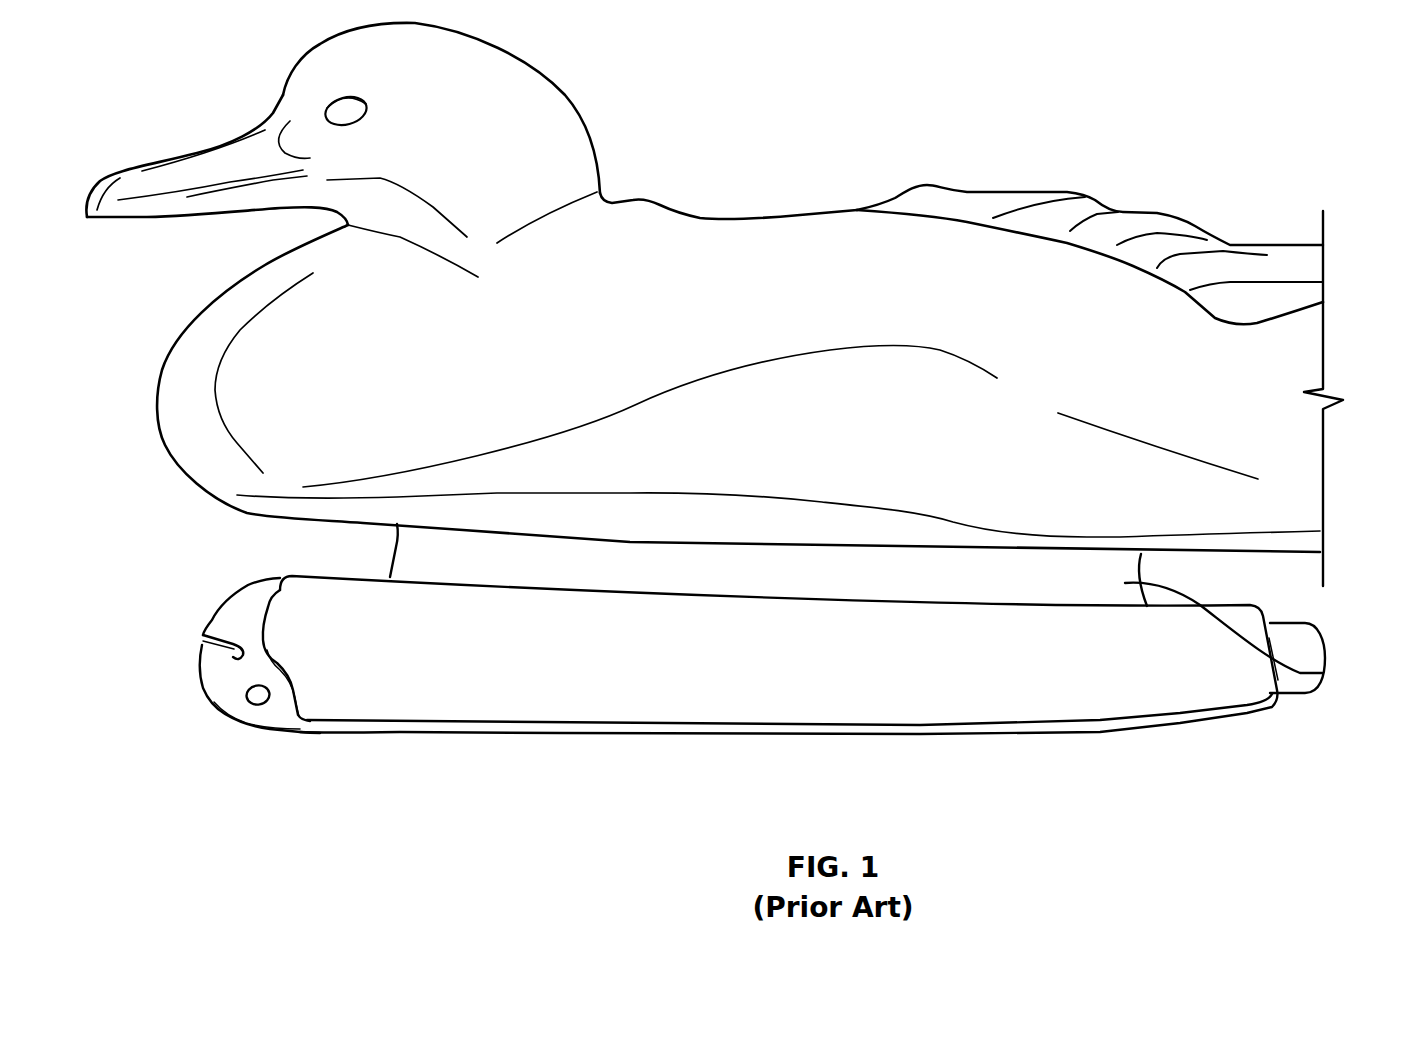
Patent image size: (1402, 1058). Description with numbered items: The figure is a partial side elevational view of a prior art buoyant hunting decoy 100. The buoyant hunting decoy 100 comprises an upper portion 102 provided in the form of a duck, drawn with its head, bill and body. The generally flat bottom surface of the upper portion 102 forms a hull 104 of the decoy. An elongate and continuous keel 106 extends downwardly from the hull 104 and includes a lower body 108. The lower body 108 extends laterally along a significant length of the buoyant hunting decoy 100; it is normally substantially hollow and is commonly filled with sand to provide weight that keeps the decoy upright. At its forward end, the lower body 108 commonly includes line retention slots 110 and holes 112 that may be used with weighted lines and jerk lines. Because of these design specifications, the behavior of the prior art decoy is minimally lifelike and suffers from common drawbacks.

The buoyant hunting decoy 100 is at (205, 70).
The upper portion 102 is at (937, 205).
The hull 104 is at (1297, 554).
The keel 106 is at (1327, 673).
The lower body 108 is at (1203, 697).
The line retention slots 110 is at (183, 634).
The holes 112 is at (238, 711).